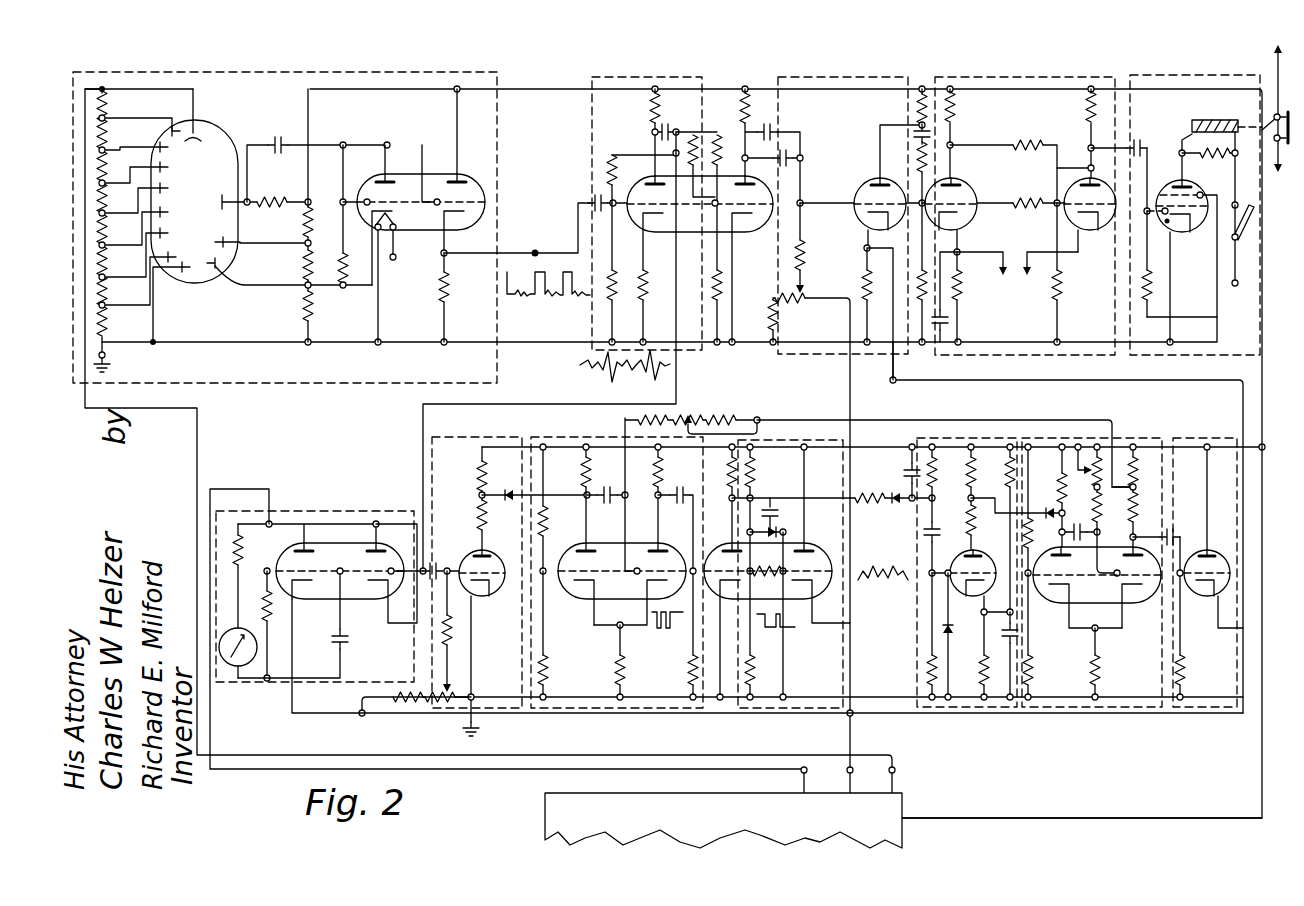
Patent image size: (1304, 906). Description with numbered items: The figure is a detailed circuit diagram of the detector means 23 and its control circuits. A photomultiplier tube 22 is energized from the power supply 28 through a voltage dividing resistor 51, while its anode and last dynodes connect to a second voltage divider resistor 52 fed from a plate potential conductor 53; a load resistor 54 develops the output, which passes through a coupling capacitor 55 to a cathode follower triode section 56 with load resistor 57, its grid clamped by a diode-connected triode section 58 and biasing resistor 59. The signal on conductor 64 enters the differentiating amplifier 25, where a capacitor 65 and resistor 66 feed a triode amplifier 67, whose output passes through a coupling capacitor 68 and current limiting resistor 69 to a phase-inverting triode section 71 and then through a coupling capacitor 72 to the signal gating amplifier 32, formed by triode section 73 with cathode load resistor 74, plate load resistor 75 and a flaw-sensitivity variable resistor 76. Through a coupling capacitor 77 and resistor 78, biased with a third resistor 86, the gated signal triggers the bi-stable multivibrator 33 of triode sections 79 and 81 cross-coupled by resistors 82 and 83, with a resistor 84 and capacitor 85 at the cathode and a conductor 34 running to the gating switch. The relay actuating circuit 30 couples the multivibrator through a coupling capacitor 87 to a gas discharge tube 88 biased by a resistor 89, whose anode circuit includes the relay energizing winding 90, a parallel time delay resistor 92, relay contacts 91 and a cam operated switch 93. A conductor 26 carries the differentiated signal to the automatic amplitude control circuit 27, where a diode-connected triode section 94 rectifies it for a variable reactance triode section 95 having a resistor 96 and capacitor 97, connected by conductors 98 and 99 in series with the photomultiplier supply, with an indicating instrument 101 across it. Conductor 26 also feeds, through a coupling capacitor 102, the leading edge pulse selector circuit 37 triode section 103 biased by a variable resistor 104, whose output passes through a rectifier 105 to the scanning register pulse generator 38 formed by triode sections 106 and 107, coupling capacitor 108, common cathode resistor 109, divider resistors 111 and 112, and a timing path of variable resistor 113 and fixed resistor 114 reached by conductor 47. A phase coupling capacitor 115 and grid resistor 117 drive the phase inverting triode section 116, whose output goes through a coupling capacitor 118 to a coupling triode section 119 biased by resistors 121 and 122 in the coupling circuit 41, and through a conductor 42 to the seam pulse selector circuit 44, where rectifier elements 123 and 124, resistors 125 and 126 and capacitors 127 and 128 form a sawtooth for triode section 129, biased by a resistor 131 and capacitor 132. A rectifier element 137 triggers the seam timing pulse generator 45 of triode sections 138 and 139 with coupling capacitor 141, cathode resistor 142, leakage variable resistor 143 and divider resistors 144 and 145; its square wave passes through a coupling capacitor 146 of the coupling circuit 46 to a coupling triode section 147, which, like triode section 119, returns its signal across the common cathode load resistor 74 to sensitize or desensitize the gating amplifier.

The detector means 23 is at (263, 72).
The voltage dividing resistor 51 is at (108, 105).
The photomultiplier tube 22 is at (222, 130).
The coupling capacitor 55 is at (286, 136).
The load resistor 54 is at (282, 196).
The second voltage divider resistor 52 is at (300, 268).
The triode section 58 is at (370, 184).
The triode section 56 is at (474, 175).
The biasing resistor 59 is at (350, 256).
The load resistor 57 is at (438, 284).
The plate potential conductor 53 is at (527, 89).
The conductor 64 is at (508, 253).
The differentiating amplifier 25 is at (607, 77).
The capacitor 65 is at (600, 212).
The resistor 66 is at (614, 276).
The triode amplifier 67 is at (646, 186).
The coupling capacitor 68 is at (662, 126).
The current limiting resistor 69 is at (698, 130).
The coupling capacitor 72 is at (766, 124).
The triode section 71 is at (776, 222).
The signal gating amplifier 32 is at (838, 76).
The variable resistor 76 is at (792, 306).
The triode section 73 is at (870, 196).
The cathode load resistor 74 is at (866, 275).
The plate load resistor 75 is at (918, 106).
The coupling capacitor 77 is at (913, 133).
The resistor 78 is at (914, 155).
The third resistor 86 is at (914, 296).
The bi-stable multivibrator 33 is at (1088, 76).
The triode section 79 is at (978, 188).
The resistor 82 is at (1032, 140).
The resistor 83 is at (1031, 208).
The resistor 84 is at (970, 284).
The capacitor 85 is at (950, 318).
The conductor 34 is at (1002, 252).
The triode section 81 is at (1090, 240).
The relay actuating circuit 30 is at (1234, 75).
The coupling capacitor 87 is at (1146, 141).
The grid control gas discharge tube 88 is at (1180, 237).
The resistor 89 is at (1152, 268).
The energizing winding 90 is at (1210, 120).
The resistor 92 is at (1203, 158).
The cam operated switch 93 is at (1246, 200).
The fixed contacts 91 is at (1266, 140).
The conductor 26 is at (526, 404).
The leading edge pulse selector circuit 37 is at (480, 434).
The scanning register pulse generator 38 is at (580, 434).
The coupling circuit 41 is at (798, 436).
The automatic amplitude control circuit 27 is at (386, 511).
The coupling capacitor 102 is at (448, 562).
The triode section 103 is at (490, 598).
The rectifier 105 is at (508, 506).
The variable resistor 104 is at (458, 685).
The resistor 111 is at (547, 504).
The resistor 112 is at (548, 657).
The triode section 106 is at (590, 550).
The triode section 107 is at (688, 550).
The common cathode load resistor 109 is at (614, 670).
The coupling capacitor 108 is at (611, 503).
The variable resistor 113 is at (684, 414).
The conductor 47 is at (903, 420).
The phase coupling capacitor 115 is at (690, 490).
The grid resistor 117 is at (690, 676).
The triode section 116 is at (724, 548).
The resistor 121 is at (757, 471).
The coupling capacitor 118 is at (774, 498).
The resistor 122 is at (770, 654).
The triode section 119 is at (826, 550).
The conductor 42 is at (830, 497).
The rectifier element 123 is at (897, 492).
The seam pulse selector circuit 44 is at (974, 438).
The seam timing pulse generator 45 is at (1150, 440).
The coupling circuit 46 is at (1211, 441).
The fixed resistor 114 is at (1135, 442).
The capacitor 127 is at (909, 462).
The resistor 125 is at (937, 480).
The capacitor 128 is at (936, 526).
The triode section 129 is at (1000, 557).
The rectifier element 124 is at (945, 626).
The resistor 126 is at (925, 665).
The resistor 131 is at (1002, 447).
The capacitor 132 is at (1020, 636).
The rectifier element 137 is at (1047, 509).
The coupling capacitor 141 is at (1075, 526).
The variable resistor 143 is at (1102, 498).
The resistor 144 is at (1033, 534).
The resistor 145 is at (1033, 670).
The triode section 138 is at (1048, 605).
The triode section 139 is at (1144, 603).
The common cathode load resistor 142 is at (1103, 663).
The coupling capacitor 146 is at (1167, 530).
The coupling triode section 147 is at (1216, 550).
The triode section 95 is at (290, 554).
The triode section 94 is at (387, 596).
The resistor 96 is at (272, 617).
The capacitor 97 is at (344, 634).
The indicating instrument 101 is at (230, 664).
The conductor 98 is at (319, 718).
The second conductor 99 is at (262, 772).
The power supply source 28 is at (545, 818).